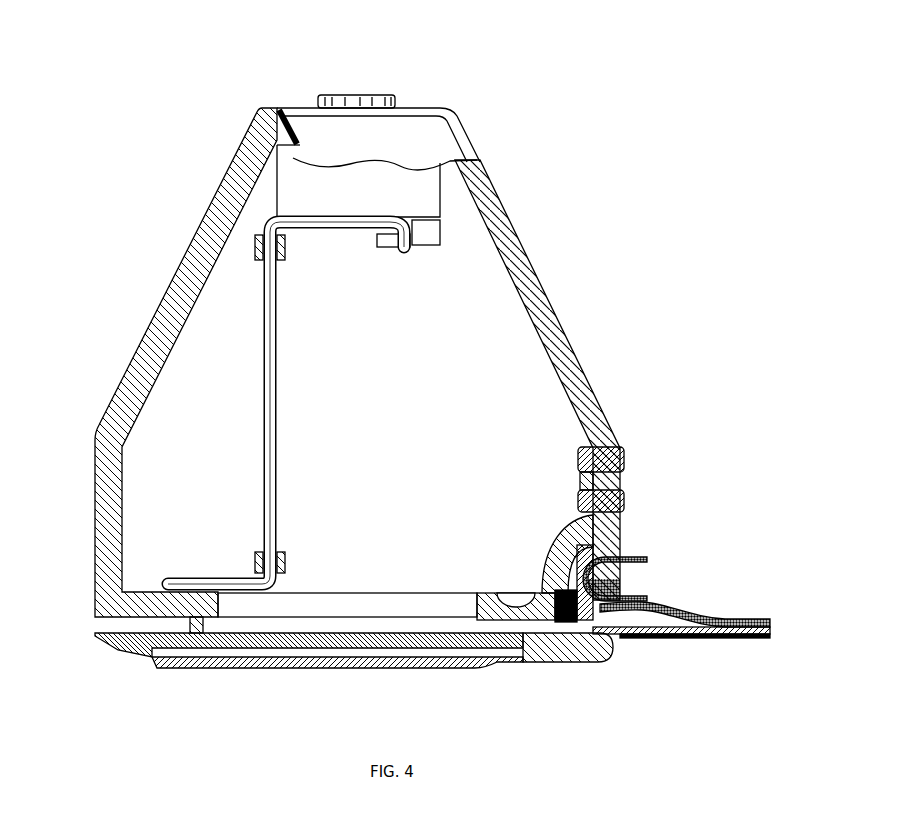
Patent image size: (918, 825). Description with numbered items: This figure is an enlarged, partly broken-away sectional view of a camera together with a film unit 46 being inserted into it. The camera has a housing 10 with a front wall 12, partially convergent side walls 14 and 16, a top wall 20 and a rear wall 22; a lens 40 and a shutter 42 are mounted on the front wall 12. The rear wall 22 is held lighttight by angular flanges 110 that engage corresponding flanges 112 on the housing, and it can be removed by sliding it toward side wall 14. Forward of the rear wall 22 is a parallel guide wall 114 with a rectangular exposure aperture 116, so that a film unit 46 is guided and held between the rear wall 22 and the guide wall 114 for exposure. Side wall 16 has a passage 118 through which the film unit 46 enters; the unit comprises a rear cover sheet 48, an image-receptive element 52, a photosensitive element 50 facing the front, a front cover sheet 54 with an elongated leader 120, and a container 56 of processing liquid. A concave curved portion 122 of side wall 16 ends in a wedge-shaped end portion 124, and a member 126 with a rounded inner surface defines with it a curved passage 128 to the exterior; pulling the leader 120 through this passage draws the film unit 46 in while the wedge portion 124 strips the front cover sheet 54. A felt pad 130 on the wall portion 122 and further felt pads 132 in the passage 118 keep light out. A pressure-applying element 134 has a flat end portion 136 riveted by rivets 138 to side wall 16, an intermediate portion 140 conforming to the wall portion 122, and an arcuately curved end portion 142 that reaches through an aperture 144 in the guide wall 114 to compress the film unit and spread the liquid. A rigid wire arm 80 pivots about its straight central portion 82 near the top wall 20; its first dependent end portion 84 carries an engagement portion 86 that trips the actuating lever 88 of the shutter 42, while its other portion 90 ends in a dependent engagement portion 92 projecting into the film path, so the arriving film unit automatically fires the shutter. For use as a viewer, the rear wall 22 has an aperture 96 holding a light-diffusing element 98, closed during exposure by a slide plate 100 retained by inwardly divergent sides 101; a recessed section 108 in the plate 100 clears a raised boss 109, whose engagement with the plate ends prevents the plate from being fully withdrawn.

The housing 10 is at (545, 262).
The front wall 12 is at (292, 107).
The side wall 14 is at (180, 277).
The side wall 16 is at (508, 228).
The top wall 20 is at (425, 140).
The rear wall 22 is at (107, 647).
The lens 40 is at (366, 93).
The shutter 42 is at (348, 177).
The film unit 46 is at (696, 599).
The rear cover sheet 48 is at (722, 634).
The photosensitive element 50 is at (767, 618).
The image-receptive element 52 is at (767, 638).
The front cover sheet 54 is at (747, 619).
The container 56 is at (678, 619).
The arm 80 is at (281, 348).
The central portion 82 is at (266, 392).
The first dependent end portion 84 is at (303, 221).
The dependent engagement portion 86 is at (403, 246).
The actuating lever 88 is at (437, 238).
The portion 90 is at (215, 575).
The dependent engagement portion 92 is at (207, 625).
The aperture 96 is at (208, 648).
The light-diffusing element 98 is at (365, 636).
The slide plate 100 is at (421, 674).
The inwardly divergent sides 101 is at (507, 658).
The recessed section 108 is at (328, 661).
The raised boss 109 is at (160, 668).
The angular flanges 110 is at (103, 628).
The flanges 112 is at (118, 654).
The guide wall 114 is at (153, 600).
The exposure aperture 116 is at (312, 604).
The passage 118 is at (618, 583).
The leader 120 is at (633, 560).
The concave curved portion 122 is at (587, 543).
The wedge-shaped end portion 124 is at (585, 655).
The member 126 is at (630, 575).
The curved passage 128 is at (570, 563).
The felt pad 130 is at (567, 622).
The felt pads 132 is at (617, 600).
The pressure-applying element 134 is at (537, 577).
The flat end portion 136 is at (580, 480).
The rivets 138 is at (597, 457).
The intermediate portion 140 is at (570, 543).
The arcuately curved end portion 142 is at (530, 621).
The aperture 144 is at (477, 625).